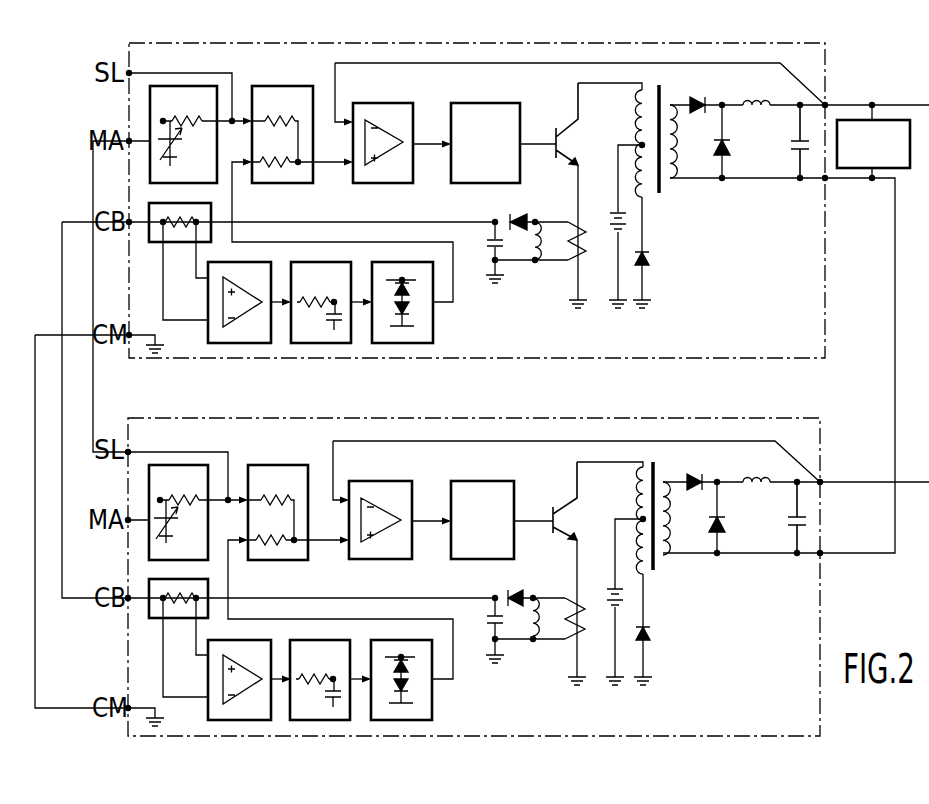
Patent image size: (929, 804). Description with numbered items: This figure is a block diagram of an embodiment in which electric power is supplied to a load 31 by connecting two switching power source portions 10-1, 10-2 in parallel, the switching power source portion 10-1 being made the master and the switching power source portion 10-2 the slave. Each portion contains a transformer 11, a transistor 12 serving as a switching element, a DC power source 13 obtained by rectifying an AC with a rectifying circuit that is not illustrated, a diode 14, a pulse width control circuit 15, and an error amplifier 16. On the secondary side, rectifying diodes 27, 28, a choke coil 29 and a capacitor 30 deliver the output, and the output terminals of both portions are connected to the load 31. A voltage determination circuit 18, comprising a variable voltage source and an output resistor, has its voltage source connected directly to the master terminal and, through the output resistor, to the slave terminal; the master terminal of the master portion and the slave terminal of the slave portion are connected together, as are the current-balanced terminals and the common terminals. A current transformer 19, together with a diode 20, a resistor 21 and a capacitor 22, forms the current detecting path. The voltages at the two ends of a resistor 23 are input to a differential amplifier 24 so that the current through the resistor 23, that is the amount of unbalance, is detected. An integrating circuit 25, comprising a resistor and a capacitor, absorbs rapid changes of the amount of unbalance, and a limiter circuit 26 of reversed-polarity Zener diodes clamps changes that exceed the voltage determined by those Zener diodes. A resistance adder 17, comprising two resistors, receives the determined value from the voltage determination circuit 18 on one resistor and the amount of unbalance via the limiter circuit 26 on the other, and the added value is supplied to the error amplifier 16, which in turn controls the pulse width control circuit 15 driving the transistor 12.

The switching power source portion 10-1 is at (826, 307).
The switching power source portion 10-2 is at (806, 418).
The transformer 11 is at (662, 190).
The transistor 12 is at (568, 120).
The DC power source 13 is at (614, 212).
The diode 14 is at (645, 266).
The pulse width control circuit 15 is at (477, 103).
The error amplifier 16 is at (371, 103).
The resistance adder 17 is at (277, 86).
The voltage determination circuit 18 is at (188, 86).
The current transformer 19 is at (586, 252).
The diode 20 is at (518, 220).
The resistor 21 is at (541, 250).
The capacitor 22 is at (490, 245).
The resistor for obtaining the amount of unbalance 23 is at (150, 242).
The differential amplifier 24 is at (240, 343).
The integrating circuit 25 is at (331, 343).
The limiter circuit 26 is at (404, 343).
The rectifying diode 27 is at (697, 100).
The rectifying diode 28 is at (730, 150).
The choke coil 29 is at (756, 100).
The capacitor 30 is at (795, 142).
The load 31 is at (890, 118).